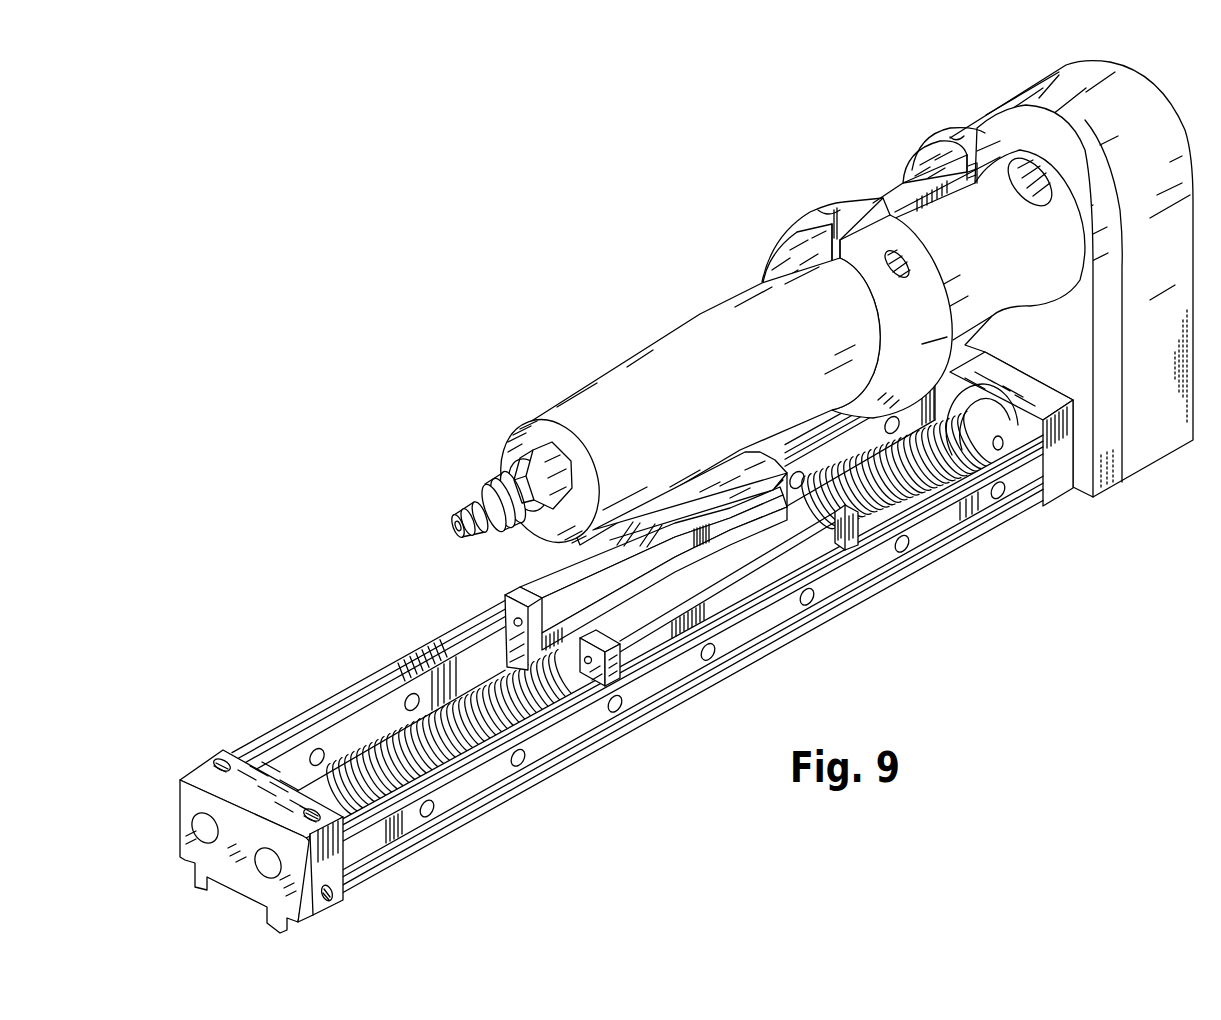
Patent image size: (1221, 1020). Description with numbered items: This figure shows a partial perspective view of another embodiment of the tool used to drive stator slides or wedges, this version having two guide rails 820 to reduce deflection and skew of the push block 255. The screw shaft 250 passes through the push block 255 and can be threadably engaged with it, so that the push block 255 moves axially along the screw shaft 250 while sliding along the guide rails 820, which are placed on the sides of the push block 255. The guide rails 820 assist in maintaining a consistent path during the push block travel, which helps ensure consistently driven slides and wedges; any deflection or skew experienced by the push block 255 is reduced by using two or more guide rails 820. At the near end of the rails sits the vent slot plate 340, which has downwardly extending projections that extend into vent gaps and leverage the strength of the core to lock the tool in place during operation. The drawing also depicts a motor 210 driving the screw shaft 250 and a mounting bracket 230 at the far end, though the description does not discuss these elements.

The motor 210 is at (630, 390).
The mounting bracket 230 is at (1107, 102).
The screw shaft 250 is at (913, 473).
The push block 255 is at (700, 557).
The vent slot plate 340 is at (237, 870).
The guide rails 820 is at (375, 722).